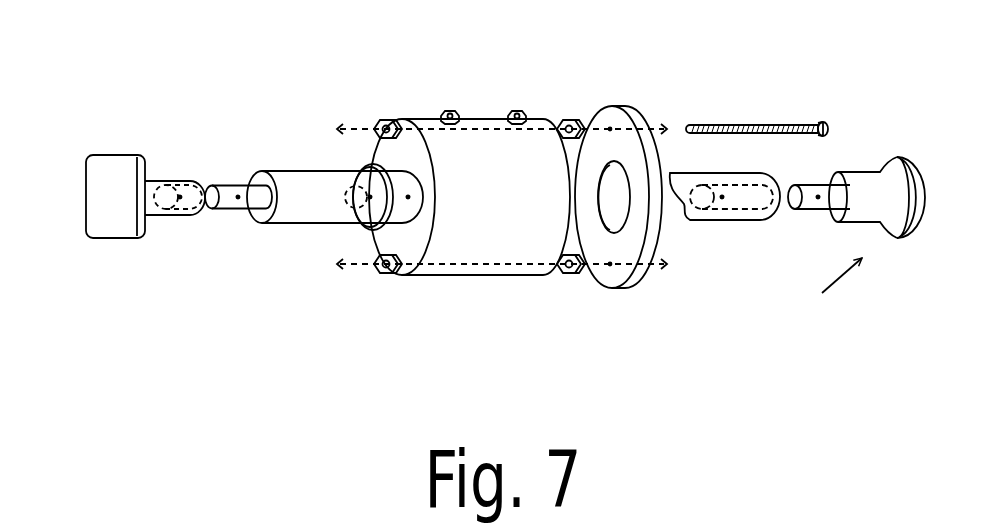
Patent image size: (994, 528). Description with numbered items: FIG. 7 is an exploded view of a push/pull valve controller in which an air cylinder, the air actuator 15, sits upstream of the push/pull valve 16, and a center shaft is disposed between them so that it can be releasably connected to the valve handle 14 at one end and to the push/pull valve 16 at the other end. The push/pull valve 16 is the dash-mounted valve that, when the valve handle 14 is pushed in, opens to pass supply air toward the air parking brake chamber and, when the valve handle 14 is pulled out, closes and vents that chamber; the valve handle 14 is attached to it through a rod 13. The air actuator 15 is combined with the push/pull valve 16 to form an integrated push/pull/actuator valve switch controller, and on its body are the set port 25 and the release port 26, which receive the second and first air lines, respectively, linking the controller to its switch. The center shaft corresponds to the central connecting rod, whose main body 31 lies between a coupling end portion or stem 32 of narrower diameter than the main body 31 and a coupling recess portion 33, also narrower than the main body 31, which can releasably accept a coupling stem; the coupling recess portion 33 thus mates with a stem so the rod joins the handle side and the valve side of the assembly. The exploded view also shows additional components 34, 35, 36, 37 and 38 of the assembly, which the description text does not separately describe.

The rod 13 is at (372, 165).
The valve handle 14 is at (117, 222).
The air actuator 15 is at (485, 275).
The push/pull valve 16 is at (827, 284).
The set port 25 is at (510, 113).
The release port 26 is at (445, 113).
The main body 31 is at (322, 208).
The coupling end portion 32 is at (238, 204).
The coupling recess portion 33 is at (185, 212).
The pin hole 34 is at (180, 197).
The flange 35 is at (608, 282).
The nut 36 is at (380, 122).
The screw 37 is at (745, 126).
The knob 38 is at (810, 185).